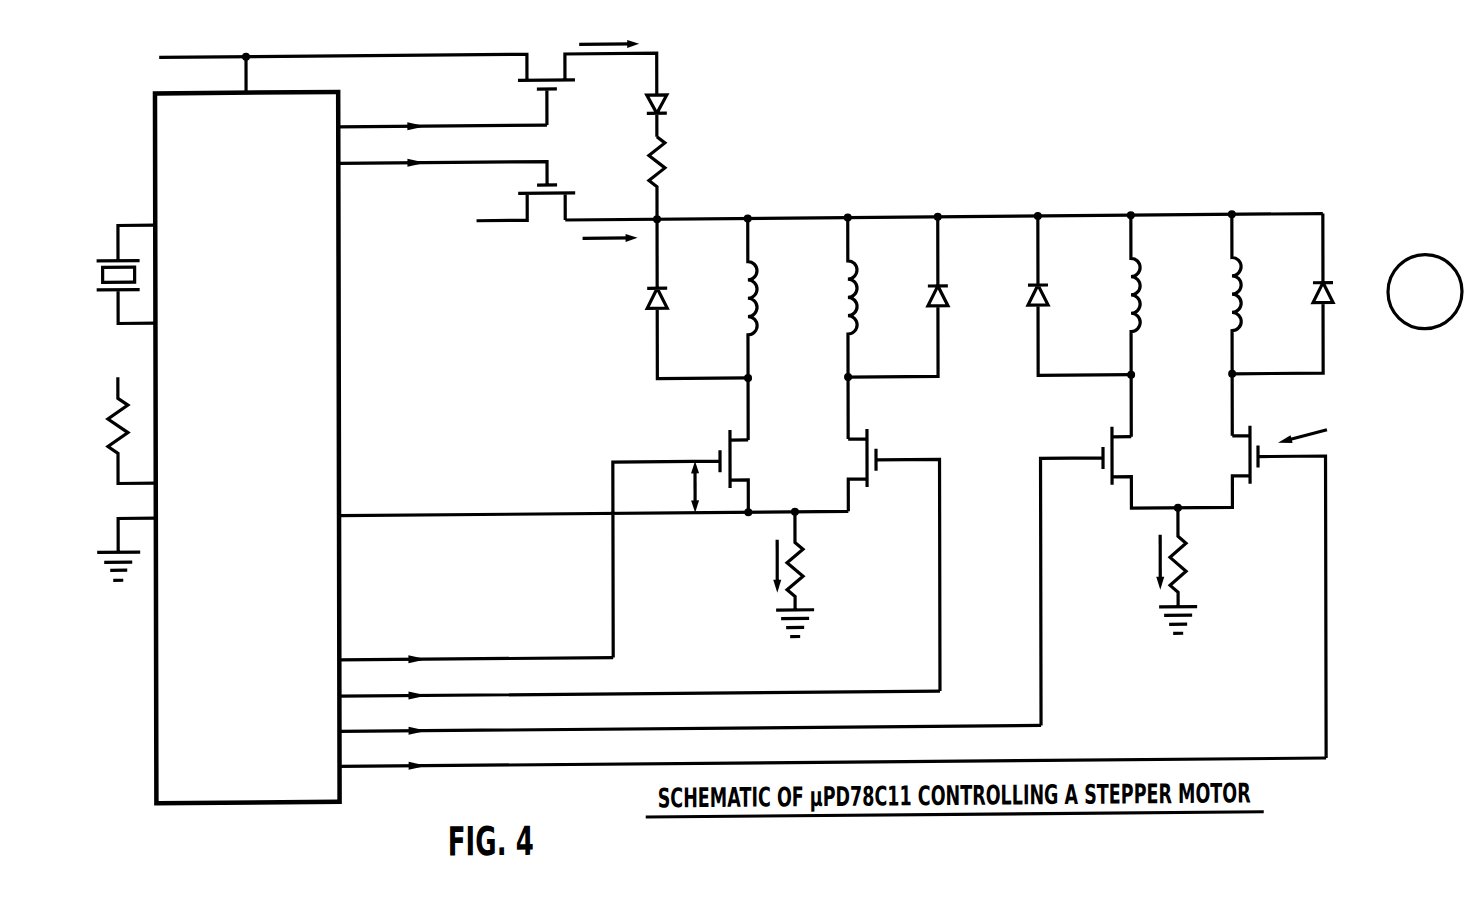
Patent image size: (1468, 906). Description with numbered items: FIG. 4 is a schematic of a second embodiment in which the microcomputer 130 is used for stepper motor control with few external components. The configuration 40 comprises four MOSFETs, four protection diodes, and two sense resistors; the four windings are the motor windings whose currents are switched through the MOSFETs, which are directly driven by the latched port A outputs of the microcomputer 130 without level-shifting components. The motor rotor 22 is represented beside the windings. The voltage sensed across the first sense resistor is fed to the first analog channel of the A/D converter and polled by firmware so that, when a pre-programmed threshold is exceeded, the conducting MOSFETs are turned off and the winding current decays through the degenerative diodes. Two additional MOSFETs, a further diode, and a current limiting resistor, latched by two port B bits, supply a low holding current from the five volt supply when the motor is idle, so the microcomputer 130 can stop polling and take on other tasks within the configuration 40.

The 78C11 microcomputer 130 is at (360, 362).
The configuration 40 is at (1015, 86).
The rotor 22 is at (1438, 242).